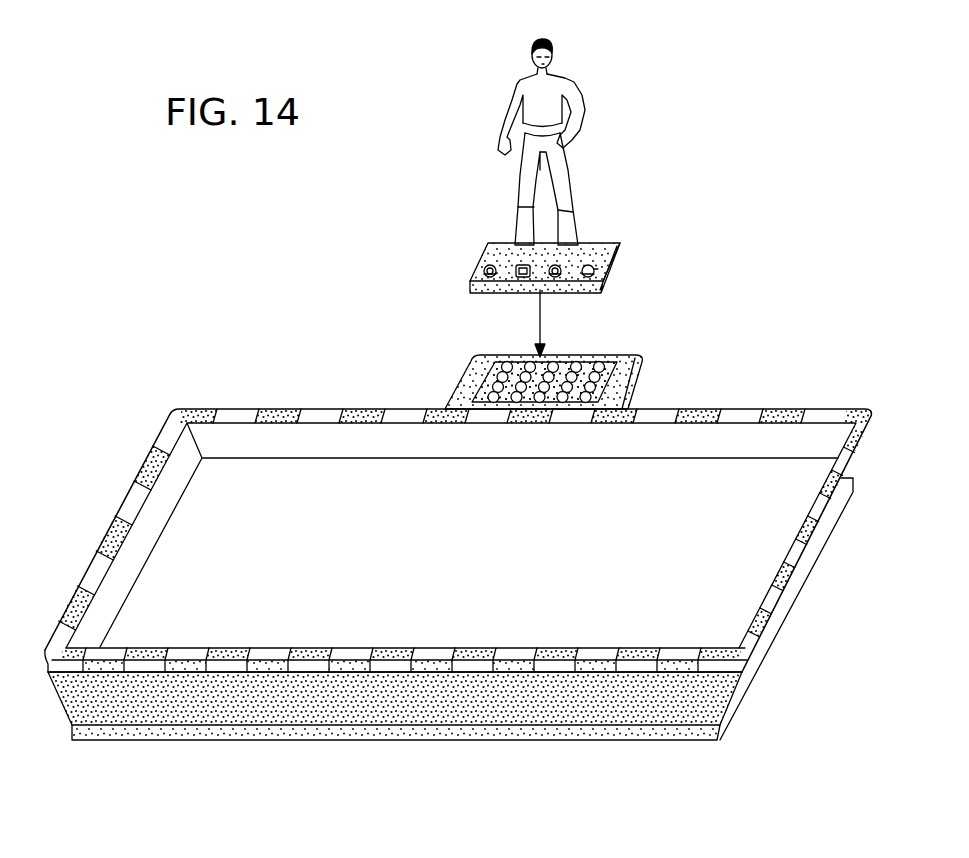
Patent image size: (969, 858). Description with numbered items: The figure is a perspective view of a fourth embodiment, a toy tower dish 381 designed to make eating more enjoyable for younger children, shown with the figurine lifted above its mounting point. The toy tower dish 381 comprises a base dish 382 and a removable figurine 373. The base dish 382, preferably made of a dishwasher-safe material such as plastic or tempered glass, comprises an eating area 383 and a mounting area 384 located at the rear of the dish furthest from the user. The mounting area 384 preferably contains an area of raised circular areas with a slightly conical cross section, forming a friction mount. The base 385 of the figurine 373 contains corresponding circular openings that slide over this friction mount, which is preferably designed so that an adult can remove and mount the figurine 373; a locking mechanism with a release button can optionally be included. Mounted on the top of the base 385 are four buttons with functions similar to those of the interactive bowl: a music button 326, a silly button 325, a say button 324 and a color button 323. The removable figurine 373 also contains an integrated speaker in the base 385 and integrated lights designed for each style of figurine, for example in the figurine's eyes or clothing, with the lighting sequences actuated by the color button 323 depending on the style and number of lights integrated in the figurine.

The removable figurine 373 is at (560, 88).
The base 385 is at (492, 252).
The color button 323 is at (488, 278).
The say button 324 is at (522, 278).
The silly button 325 is at (558, 278).
The music button 326 is at (592, 278).
The toy tower dish 381 is at (735, 371).
The mounting area 384 is at (633, 363).
The eating area 383 is at (190, 533).
The base dish 382 is at (712, 700).